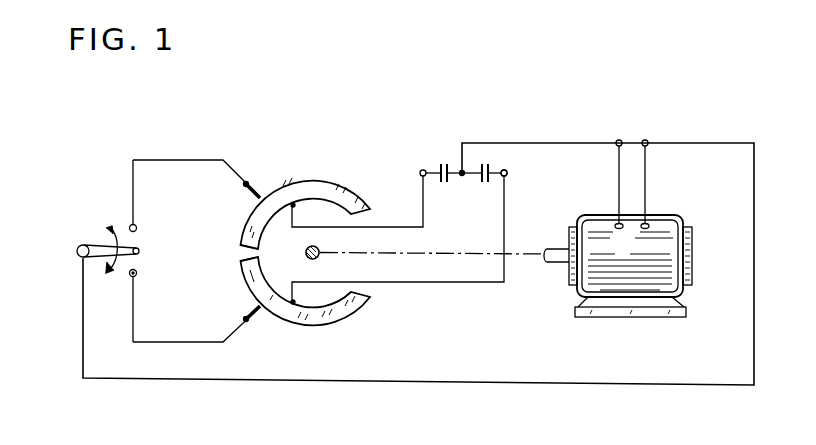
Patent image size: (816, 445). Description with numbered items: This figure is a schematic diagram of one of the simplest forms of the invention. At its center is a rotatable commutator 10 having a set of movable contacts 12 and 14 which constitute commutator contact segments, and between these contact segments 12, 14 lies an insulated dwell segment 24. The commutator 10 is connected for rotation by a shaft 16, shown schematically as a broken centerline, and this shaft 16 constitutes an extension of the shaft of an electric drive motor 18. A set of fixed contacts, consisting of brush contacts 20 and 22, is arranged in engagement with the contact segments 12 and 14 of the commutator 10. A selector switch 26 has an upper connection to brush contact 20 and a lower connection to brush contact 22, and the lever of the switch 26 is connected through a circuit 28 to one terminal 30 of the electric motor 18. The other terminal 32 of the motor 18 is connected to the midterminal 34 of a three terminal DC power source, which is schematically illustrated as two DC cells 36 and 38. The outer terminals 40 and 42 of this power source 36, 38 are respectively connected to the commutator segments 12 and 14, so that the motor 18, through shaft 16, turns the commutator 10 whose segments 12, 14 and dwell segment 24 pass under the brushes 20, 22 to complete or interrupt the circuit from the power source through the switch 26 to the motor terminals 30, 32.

The rotatable commutator 10 is at (374, 251).
The movable contact 12 is at (324, 181).
The movable contact 14 is at (333, 320).
The shaft 16 is at (458, 257).
The electric drive motor 18 is at (634, 284).
The brush contact 20 is at (258, 184).
The brush contact 22 is at (258, 312).
The insulated dwell segment 24 is at (242, 252).
The selector switch 26 is at (100, 247).
The circuit 28 is at (218, 380).
The terminal 30 is at (647, 140).
The terminal 32 is at (628, 130).
The midterminal 34 is at (461, 178).
The DC cell 36 is at (439, 162).
The DC cell 38 is at (485, 183).
The outer terminal 40 is at (420, 171).
The outer terminal 42 is at (508, 170).